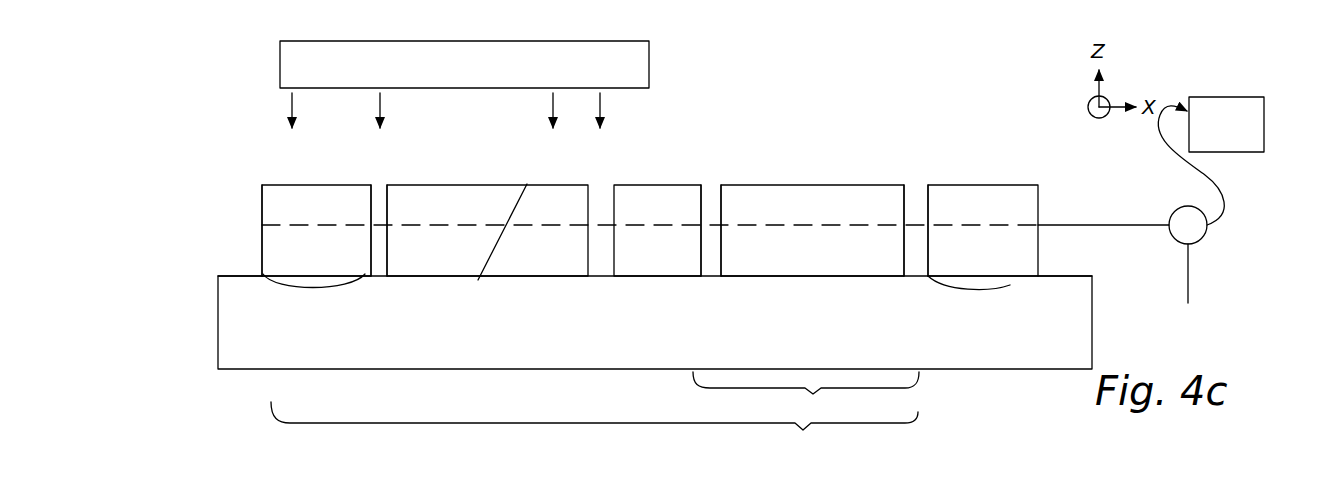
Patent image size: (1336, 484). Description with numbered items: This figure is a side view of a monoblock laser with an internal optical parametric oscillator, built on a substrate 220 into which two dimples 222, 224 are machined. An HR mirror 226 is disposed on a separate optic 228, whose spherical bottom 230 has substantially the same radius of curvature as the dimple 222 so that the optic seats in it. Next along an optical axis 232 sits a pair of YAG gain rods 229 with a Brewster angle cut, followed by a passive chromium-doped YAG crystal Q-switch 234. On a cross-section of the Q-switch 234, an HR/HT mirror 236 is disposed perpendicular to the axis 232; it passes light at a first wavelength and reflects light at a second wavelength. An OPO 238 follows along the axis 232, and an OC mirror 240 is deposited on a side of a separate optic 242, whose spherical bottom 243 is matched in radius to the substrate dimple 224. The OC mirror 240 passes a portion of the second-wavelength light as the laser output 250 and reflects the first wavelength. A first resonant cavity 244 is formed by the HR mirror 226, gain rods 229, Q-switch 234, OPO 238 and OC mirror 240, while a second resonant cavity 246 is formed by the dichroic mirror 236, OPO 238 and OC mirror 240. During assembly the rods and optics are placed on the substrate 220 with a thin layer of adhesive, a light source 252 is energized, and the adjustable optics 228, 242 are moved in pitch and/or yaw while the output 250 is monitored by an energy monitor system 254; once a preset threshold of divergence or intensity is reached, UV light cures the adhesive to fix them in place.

The substrate 220 is at (669, 339).
The dimple 222 is at (277, 282).
The dimple 224 is at (1010, 285).
The HR mirror 226 is at (262, 201).
The separate optic 228 is at (298, 185).
The YAG gain rods 229 is at (437, 185).
The spherical bottom 230 is at (282, 285).
The optical axis 232 is at (377, 227).
The Q-switch 234 is at (622, 185).
The HR/HT mirror 236 is at (705, 203).
The OPO 238 is at (795, 186).
The OC mirror 240 is at (930, 200).
The separate optic 242 is at (1040, 226).
The spherical bottom 243 is at (1010, 285).
The first resonant cavity 244 is at (594, 428).
The second resonant cavity 246 is at (806, 395).
The laser output 250 is at (1108, 225).
The light source 252 is at (464, 84).
The energy monitor system 254 is at (1243, 133).